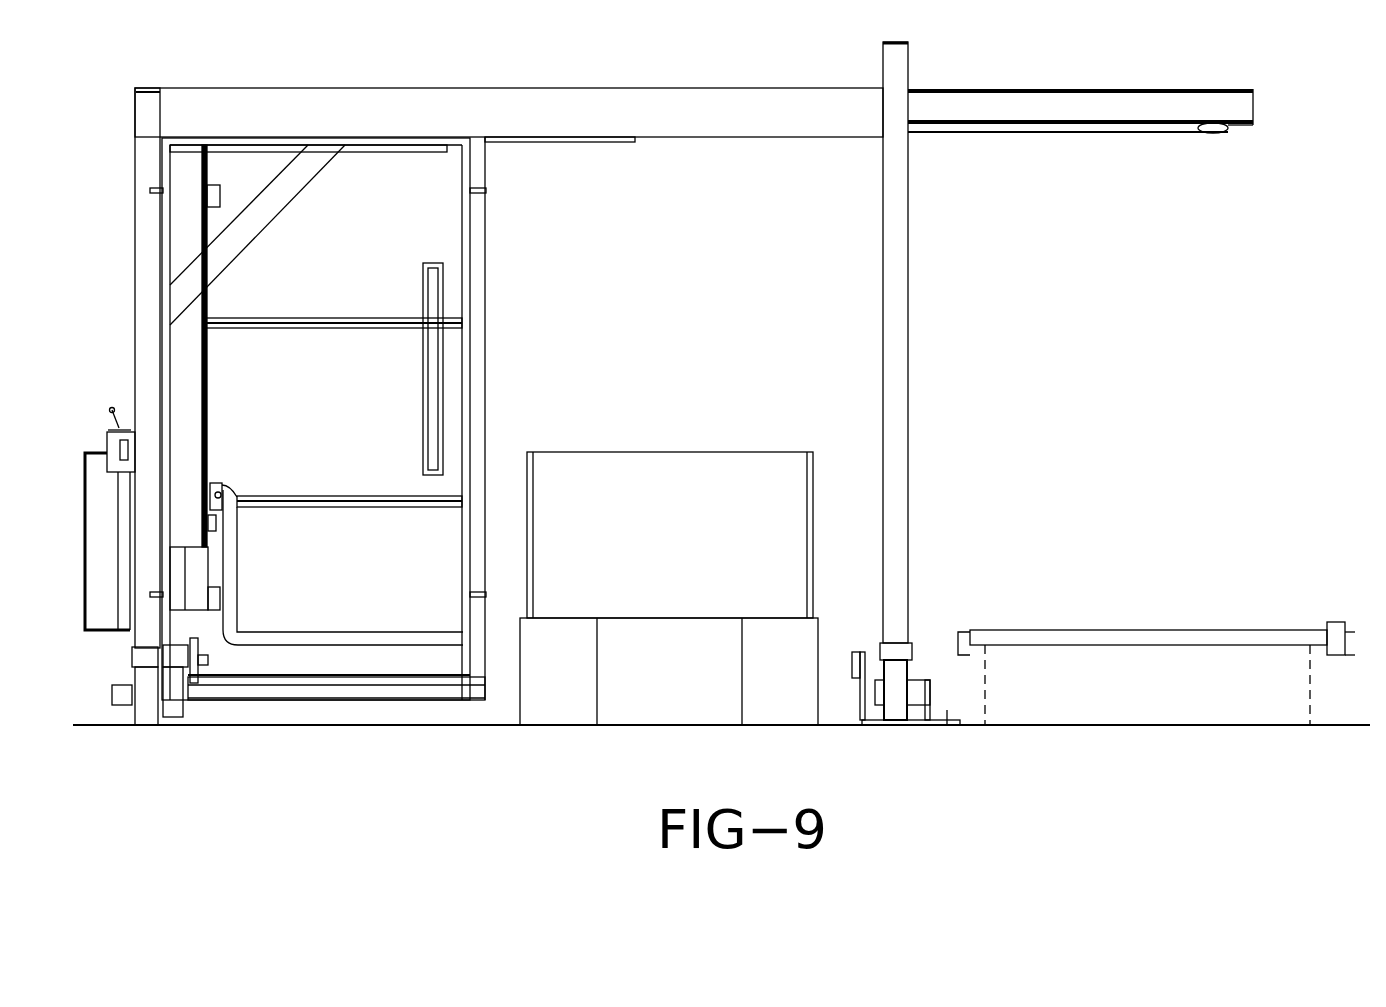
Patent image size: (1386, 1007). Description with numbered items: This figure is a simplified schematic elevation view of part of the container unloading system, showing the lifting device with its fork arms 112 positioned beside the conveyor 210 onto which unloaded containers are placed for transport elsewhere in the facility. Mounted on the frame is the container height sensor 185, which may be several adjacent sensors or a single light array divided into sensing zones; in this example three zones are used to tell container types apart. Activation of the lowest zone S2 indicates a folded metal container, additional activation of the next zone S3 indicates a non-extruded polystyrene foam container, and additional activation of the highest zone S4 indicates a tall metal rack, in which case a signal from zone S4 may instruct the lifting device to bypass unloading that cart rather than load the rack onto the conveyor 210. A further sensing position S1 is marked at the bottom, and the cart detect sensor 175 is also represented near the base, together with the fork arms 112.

The container height sensor 185 is at (443, 282).
The fork arms 112 is at (363, 632).
The cart detect sensor 175 is at (200, 662).
The conveyor 210 is at (1055, 628).
The sensor position 1 S1 is at (208, 659).
The lowest container height sensor or zone S2 is at (428, 443).
The next highest sensor or zone S3 is at (428, 370).
The highest sensor or zone S4 is at (428, 296).